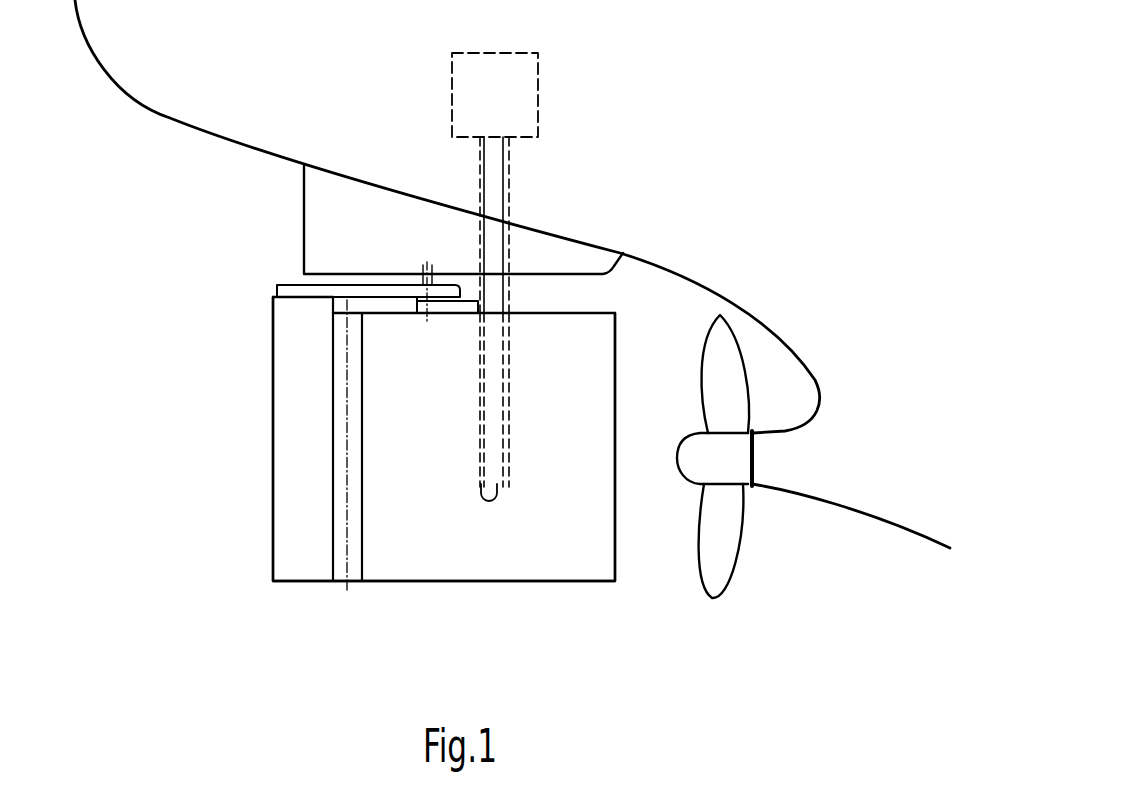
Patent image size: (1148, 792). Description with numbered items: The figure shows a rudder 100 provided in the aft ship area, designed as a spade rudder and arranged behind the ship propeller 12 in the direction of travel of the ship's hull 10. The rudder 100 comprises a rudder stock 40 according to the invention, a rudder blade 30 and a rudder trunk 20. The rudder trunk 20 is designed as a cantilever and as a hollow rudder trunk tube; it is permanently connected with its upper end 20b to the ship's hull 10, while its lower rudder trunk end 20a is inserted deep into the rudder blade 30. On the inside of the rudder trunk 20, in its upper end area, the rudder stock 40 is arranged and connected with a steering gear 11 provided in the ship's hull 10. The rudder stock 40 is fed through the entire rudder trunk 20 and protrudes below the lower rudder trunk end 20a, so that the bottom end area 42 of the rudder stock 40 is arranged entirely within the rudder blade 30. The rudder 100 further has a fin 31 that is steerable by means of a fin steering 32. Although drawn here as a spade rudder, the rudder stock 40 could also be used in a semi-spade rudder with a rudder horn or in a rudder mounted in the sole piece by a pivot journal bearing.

The ship's hull 10 is at (170, 118).
The steering gear 11 is at (520, 98).
The ship propeller 12 is at (748, 510).
The rudder trunk 20 is at (508, 397).
The lower rudder trunk end 20a is at (507, 482).
The upper rudder trunk end 20b is at (508, 162).
The rudder blade 30 is at (549, 560).
The fin 31 is at (303, 458).
The fin steering 32 is at (381, 282).
The rudder stock 40 is at (488, 194).
The bottom end area of the rudder stock 42 is at (473, 478).
The rudder 100 is at (257, 357).